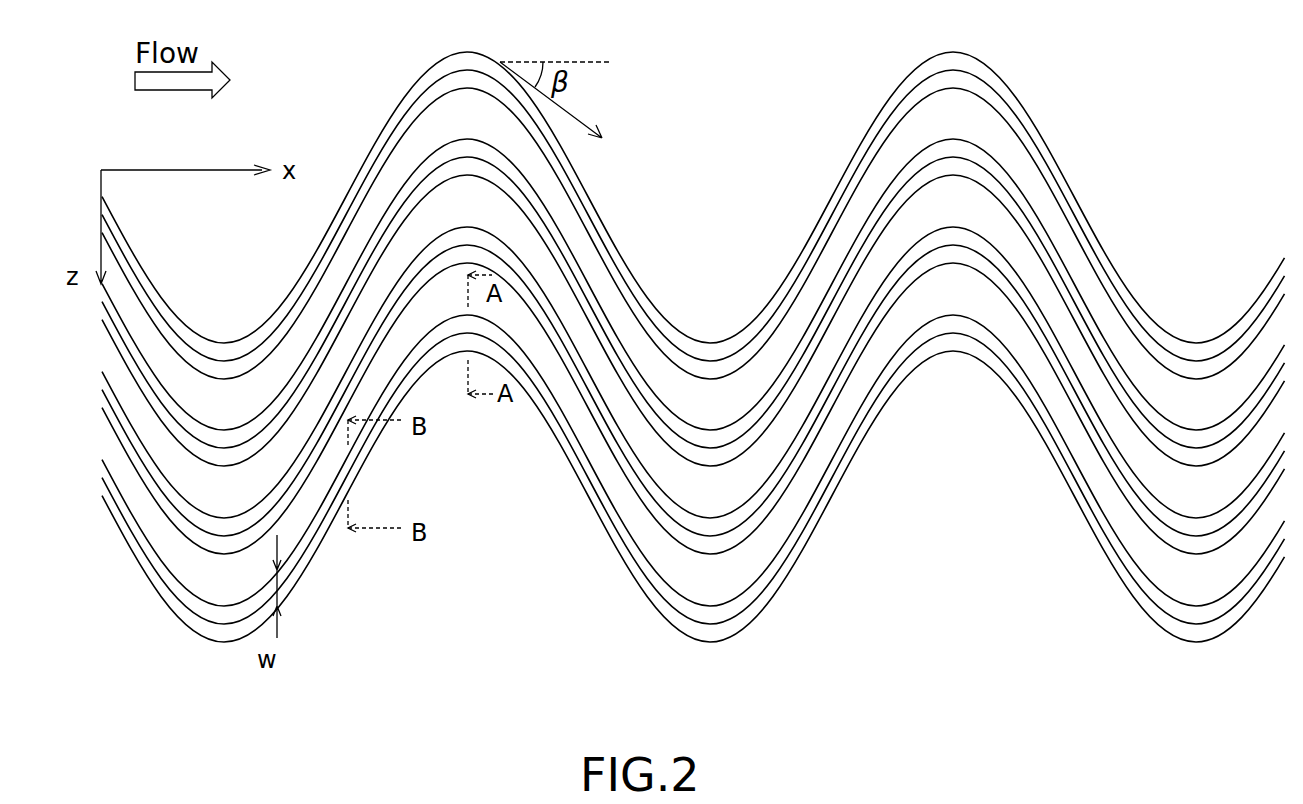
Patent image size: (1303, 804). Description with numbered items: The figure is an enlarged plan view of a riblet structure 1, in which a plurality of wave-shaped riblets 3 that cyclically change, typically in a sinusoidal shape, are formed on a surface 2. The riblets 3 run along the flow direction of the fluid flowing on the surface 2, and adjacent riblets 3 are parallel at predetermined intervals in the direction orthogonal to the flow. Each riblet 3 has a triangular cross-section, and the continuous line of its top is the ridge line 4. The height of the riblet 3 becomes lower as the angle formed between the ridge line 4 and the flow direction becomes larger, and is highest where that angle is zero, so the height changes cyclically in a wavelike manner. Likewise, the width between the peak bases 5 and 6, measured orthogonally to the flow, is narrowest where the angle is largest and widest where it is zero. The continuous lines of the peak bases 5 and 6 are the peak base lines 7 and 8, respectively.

The riblet structure 1 is at (693, 365).
The surface 2 is at (693, 202).
The riblet 3 is at (460, 80).
The ridge line 4 is at (247, 347).
The peak base 5 is at (282, 572).
The peak base 6 is at (693, 510).
The peak base line 7 is at (722, 612).
The peak base line 8 is at (700, 640).